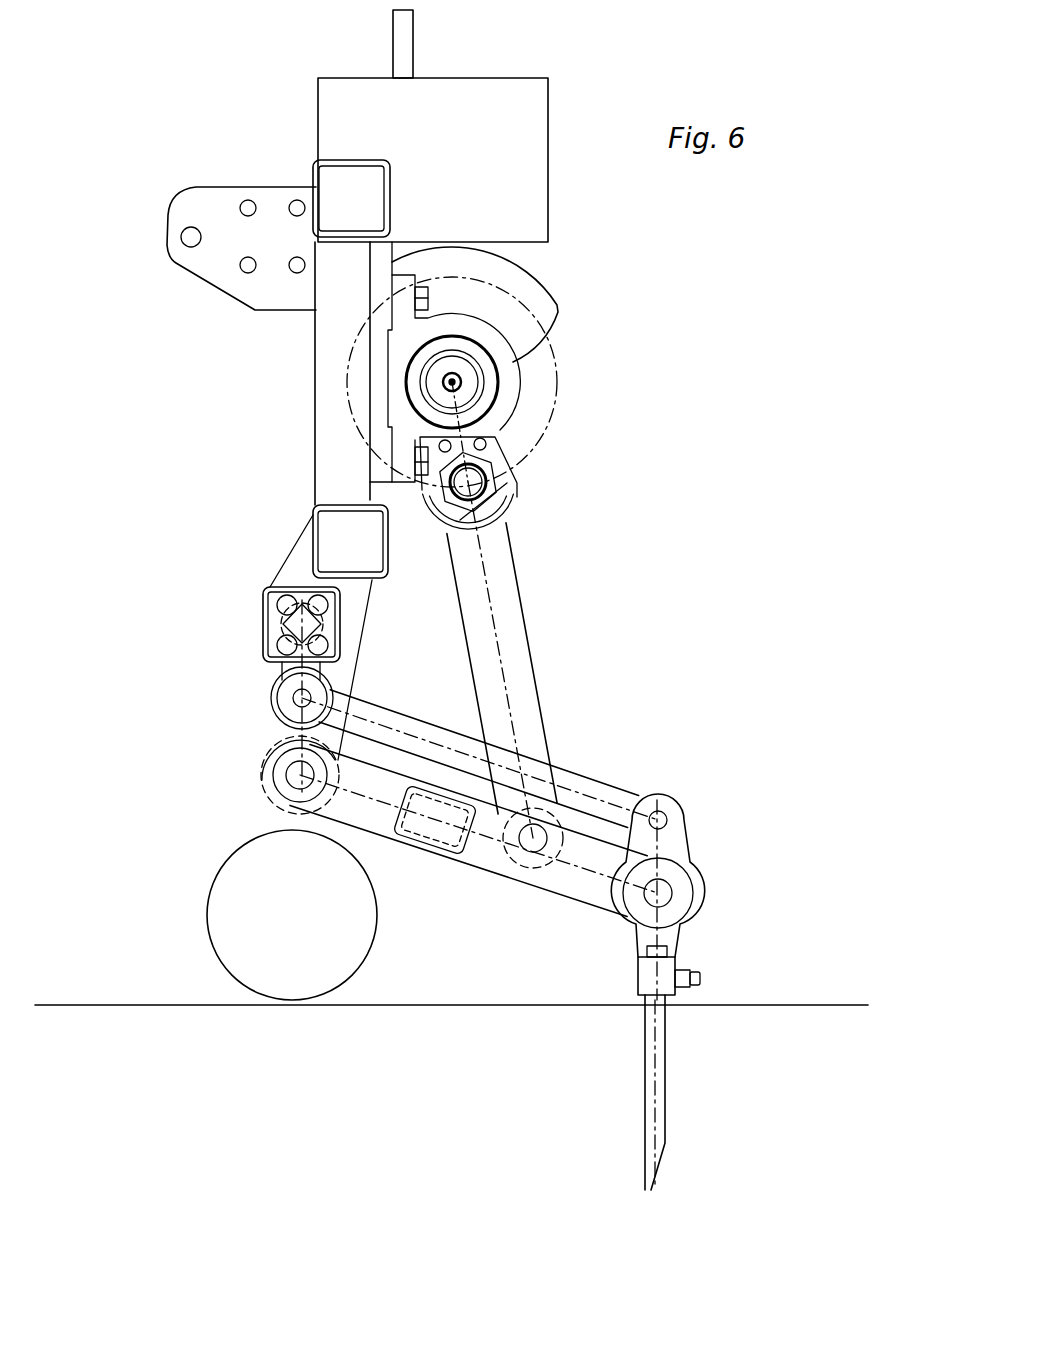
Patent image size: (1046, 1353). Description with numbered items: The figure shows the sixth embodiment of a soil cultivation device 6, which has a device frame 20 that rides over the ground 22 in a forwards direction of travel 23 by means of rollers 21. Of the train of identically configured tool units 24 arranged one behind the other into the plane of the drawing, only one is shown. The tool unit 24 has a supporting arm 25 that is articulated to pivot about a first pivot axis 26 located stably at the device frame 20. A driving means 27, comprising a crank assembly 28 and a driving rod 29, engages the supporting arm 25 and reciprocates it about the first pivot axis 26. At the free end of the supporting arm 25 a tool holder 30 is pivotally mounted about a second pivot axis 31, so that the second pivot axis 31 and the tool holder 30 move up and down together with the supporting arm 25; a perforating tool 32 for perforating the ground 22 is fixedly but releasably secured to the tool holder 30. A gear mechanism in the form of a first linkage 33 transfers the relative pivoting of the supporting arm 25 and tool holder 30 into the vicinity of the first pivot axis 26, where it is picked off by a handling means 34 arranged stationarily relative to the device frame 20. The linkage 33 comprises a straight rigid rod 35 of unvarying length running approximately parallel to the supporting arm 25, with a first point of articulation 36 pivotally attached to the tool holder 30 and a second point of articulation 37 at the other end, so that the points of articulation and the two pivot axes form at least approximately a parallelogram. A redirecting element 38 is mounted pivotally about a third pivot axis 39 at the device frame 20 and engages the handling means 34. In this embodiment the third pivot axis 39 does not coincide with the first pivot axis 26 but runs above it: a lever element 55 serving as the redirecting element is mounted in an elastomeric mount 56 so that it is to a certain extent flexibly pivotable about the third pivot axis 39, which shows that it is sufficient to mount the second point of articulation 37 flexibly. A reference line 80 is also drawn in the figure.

The soil cultivation device 6 is at (672, 404).
The device frame 20 is at (318, 416).
The rollers 21 is at (358, 943).
The ground 22 is at (437, 1012).
The forwards direction of travel 23 is at (777, 527).
The tool unit 24 is at (712, 738).
The supporting arm 25 is at (524, 878).
The first pivot axis 26 is at (297, 778).
The driving means 27 is at (550, 494).
The crank assembly 28 is at (518, 382).
The driving rod 29 is at (521, 631).
The tool holder 30 is at (698, 857).
The second pivot axis 31 is at (664, 893).
The perforating tool 32 is at (666, 1053).
The first linkage 33 is at (592, 752).
The handling means 34 is at (248, 636).
The rigid rod 35 is at (417, 720).
The first point of articulation 36 is at (682, 808).
The second point of articulation 37 is at (307, 697).
The redirecting element 38 is at (320, 670).
The third pivot axis 39 is at (299, 622).
The lever element 55 is at (284, 672).
The elastomeric mount 56 is at (272, 622).
The reference line 80 is at (617, 957).